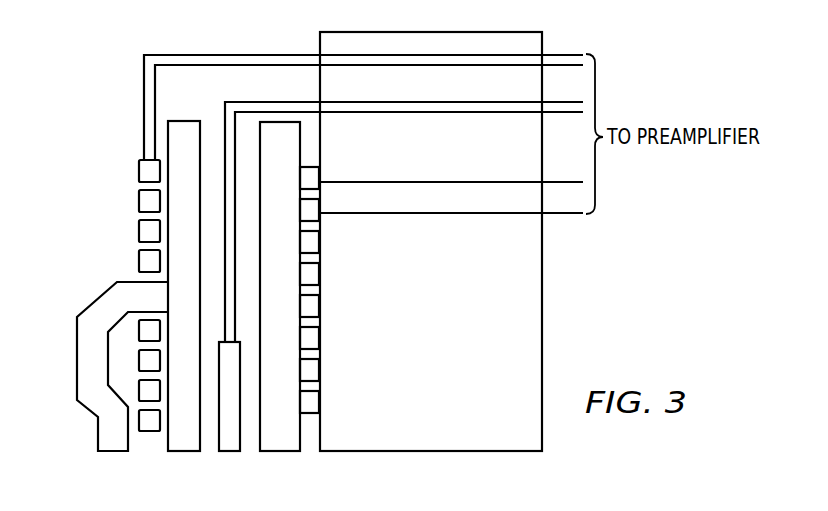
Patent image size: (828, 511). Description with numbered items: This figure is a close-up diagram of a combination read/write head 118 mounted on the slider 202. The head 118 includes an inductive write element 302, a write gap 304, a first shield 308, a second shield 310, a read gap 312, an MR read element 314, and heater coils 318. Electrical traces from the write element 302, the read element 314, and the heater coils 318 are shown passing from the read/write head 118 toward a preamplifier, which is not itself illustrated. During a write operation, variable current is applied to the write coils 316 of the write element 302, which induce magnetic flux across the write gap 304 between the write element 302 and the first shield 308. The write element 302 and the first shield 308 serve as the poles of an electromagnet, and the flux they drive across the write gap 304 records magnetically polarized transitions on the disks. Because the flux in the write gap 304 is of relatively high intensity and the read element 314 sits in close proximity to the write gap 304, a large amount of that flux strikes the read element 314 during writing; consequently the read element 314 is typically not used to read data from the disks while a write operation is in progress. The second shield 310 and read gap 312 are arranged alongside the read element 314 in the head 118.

The head 118 is at (620, 302).
The slider 202 is at (448, 366).
The inductive write element 302 is at (128, 214).
The write gap 304 is at (168, 464).
The first shield 308 is at (185, 125).
The second shield 310 is at (287, 452).
The read gap 312 is at (263, 464).
The MR read element 314 is at (212, 427).
The write coils 316 is at (118, 354).
The heater coils 318 is at (315, 270).